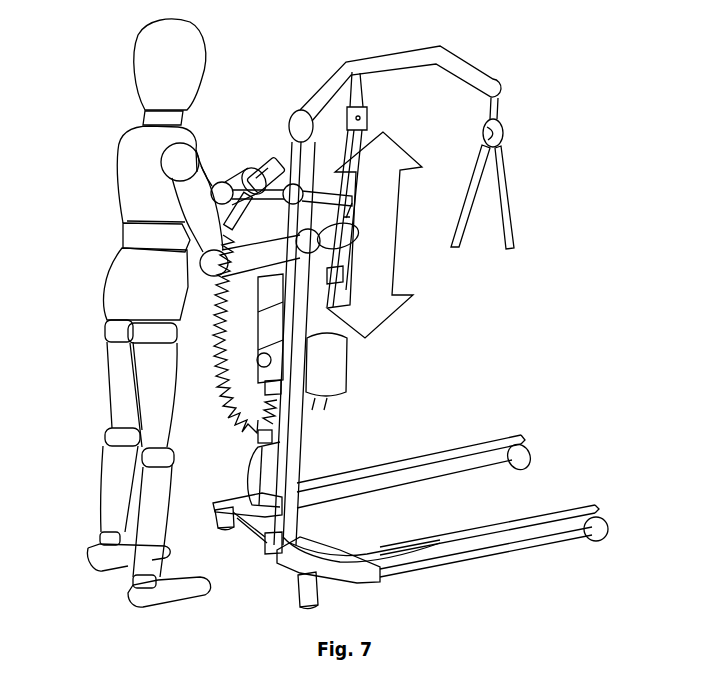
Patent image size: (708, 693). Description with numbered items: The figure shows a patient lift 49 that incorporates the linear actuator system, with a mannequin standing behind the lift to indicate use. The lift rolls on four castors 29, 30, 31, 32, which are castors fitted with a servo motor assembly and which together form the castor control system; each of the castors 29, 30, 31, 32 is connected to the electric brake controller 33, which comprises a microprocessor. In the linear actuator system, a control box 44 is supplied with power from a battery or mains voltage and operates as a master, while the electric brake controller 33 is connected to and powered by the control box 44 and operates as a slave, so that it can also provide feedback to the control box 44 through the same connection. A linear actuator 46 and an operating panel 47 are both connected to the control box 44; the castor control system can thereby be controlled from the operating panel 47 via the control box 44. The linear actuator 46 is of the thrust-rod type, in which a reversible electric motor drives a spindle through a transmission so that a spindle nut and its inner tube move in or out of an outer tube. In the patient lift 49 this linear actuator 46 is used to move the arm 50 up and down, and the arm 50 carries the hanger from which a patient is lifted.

The castor 29 is at (531, 452).
The castor 30 is at (604, 535).
The castor 31 is at (220, 522).
The castor 32 is at (296, 598).
The electric brake controller 33 is at (268, 330).
The control box 44 is at (273, 290).
The linear actuator 46 is at (340, 360).
The operating panel 47 is at (265, 166).
The patient lift 49 is at (541, 63).
The arm 50 is at (377, 57).